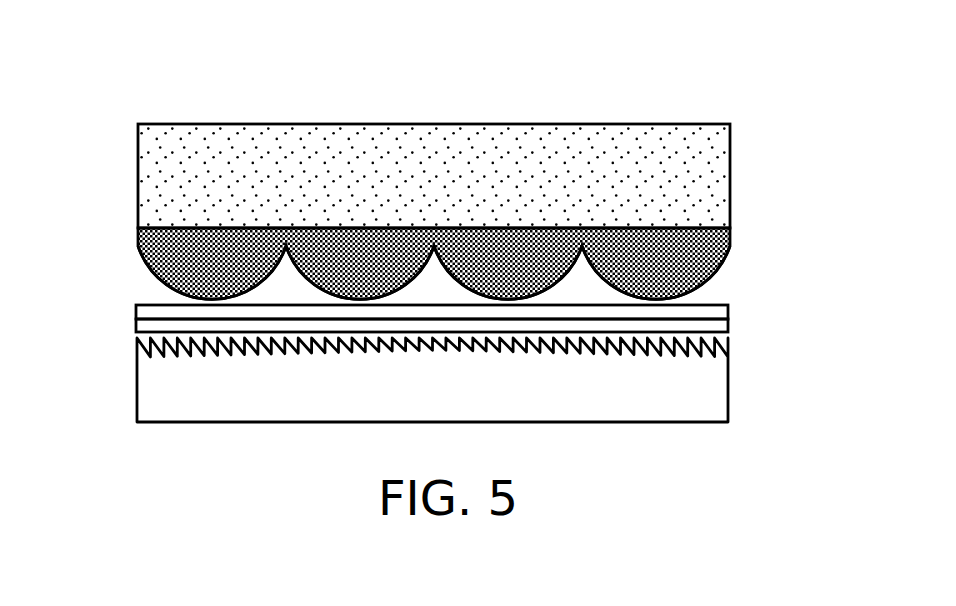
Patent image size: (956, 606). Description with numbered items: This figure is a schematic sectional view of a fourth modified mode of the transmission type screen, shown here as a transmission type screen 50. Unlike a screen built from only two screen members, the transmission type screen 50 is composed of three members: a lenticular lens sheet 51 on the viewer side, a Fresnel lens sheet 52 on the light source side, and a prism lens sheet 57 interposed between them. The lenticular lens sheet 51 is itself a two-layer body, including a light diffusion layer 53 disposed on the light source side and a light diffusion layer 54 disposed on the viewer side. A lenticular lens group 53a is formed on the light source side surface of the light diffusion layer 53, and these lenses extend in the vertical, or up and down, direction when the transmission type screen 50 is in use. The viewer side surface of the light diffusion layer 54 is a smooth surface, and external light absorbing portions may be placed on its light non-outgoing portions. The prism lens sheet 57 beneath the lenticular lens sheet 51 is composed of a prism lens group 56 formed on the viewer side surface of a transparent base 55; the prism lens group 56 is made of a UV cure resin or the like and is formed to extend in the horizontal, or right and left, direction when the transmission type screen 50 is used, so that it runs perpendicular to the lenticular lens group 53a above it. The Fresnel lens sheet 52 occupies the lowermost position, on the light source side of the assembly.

The transmission type screen 50 is at (431, 215).
The lenticular lens sheet 51 is at (431, 211).
The Fresnel lens sheet 52 is at (128, 396).
The light diffusion layer 53 is at (728, 239).
The lenticular lens group 53a is at (718, 272).
The light diffusion layer 54 is at (720, 166).
The transparent base 55 is at (728, 322).
The prism lens group 56 is at (728, 310).
The prism lens sheet 57 is at (423, 310).